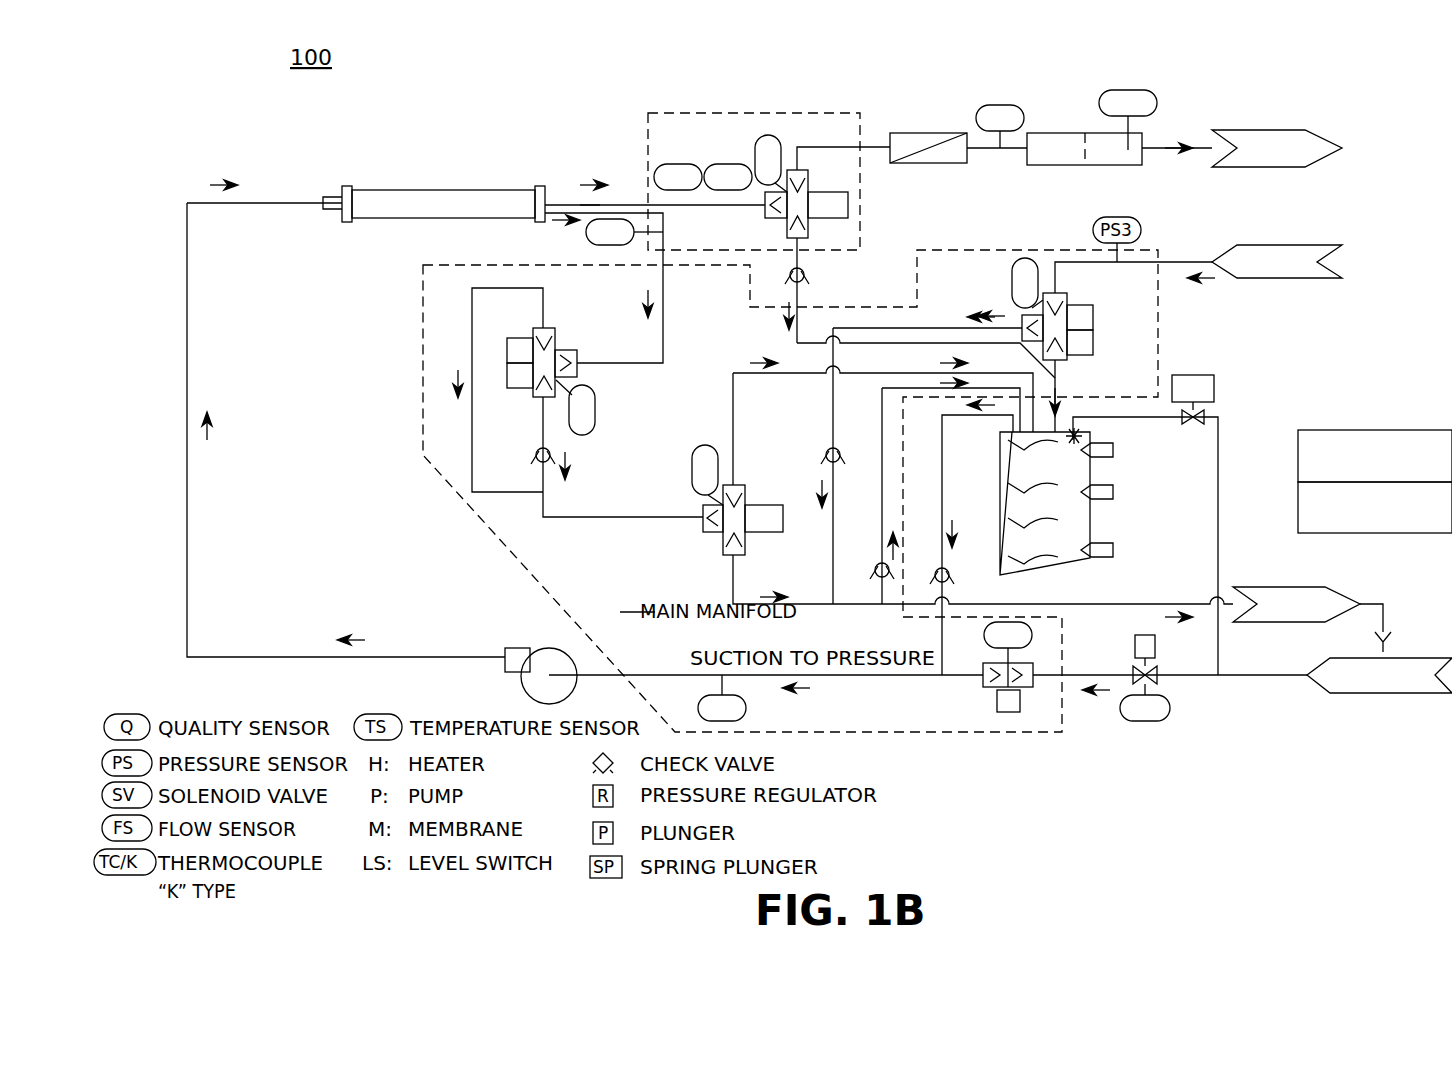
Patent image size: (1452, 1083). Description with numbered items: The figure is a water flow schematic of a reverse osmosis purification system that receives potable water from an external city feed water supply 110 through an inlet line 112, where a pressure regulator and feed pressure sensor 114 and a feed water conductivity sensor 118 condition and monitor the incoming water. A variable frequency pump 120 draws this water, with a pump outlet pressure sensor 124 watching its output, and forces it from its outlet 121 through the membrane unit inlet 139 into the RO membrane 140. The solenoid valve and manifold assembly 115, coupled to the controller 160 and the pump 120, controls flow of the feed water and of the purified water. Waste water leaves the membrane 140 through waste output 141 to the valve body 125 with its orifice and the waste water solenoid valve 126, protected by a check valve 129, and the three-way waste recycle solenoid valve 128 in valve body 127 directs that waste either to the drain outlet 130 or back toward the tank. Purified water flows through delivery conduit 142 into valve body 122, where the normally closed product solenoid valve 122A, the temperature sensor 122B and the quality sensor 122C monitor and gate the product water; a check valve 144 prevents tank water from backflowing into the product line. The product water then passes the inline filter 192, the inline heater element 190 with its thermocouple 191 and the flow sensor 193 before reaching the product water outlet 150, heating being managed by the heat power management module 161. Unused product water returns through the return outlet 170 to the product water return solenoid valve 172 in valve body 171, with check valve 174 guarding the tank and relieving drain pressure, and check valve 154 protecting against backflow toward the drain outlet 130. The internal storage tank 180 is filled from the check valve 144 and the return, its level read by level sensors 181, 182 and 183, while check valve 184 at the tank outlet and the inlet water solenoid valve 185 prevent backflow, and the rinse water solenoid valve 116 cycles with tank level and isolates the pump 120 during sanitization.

The feed water supply 110 is at (1370, 695).
The inlet 112 is at (1275, 680).
The pressure regulator with pressure sensor 114 is at (1165, 688).
The solenoid valve and manifold assembly 115 is at (575, 612).
The solenoid valve 116 is at (1040, 690).
The quality sensor Q1 118 is at (746, 708).
The variable frequency pump 120 is at (525, 690).
The outlet of the VFD pump 121 is at (503, 648).
The valve body 122 is at (830, 110).
The solenoid valve 122A is at (770, 130).
The temperature sensor 122B is at (722, 164).
The quality sensor 122C is at (670, 164).
The pressure sensor PS2 124 is at (586, 240).
The valve body 125 is at (578, 362).
The solenoid valve 126 is at (596, 405).
The valve body 127 is at (735, 480).
The solenoid valve 128 is at (688, 445).
The check valve 129 is at (552, 452).
The drain outlet 130 is at (1352, 600).
The RO membrane unit inlet 139 is at (330, 212).
The RO membrane 140 is at (418, 188).
The waste output 141 is at (560, 205).
The delivery conduit 142 is at (584, 203).
The check valve 144 is at (805, 268).
The product water outlet 150 is at (1298, 168).
The check valve 154 is at (873, 560).
The controller 160 is at (1376, 430).
The heat power management module 161 is at (1428, 535).
The return outlet 170 is at (1298, 280).
The valve body 171 is at (1068, 300).
The solenoid valve 172 is at (1010, 258).
The check valve 174 is at (846, 448).
The internal storage tank 180 is at (1070, 565).
The level sensor 181 is at (1100, 445).
The level sensor 182 is at (1100, 487).
The level sensor 183 is at (1100, 545).
The check valve 184 is at (935, 568).
The solenoid valve 185 is at (1207, 415).
The inline heater element 190 is at (1133, 174).
The thermocouple 191 is at (1135, 90).
The inline filter 192 is at (912, 133).
The flow sensor 193 is at (1000, 105).